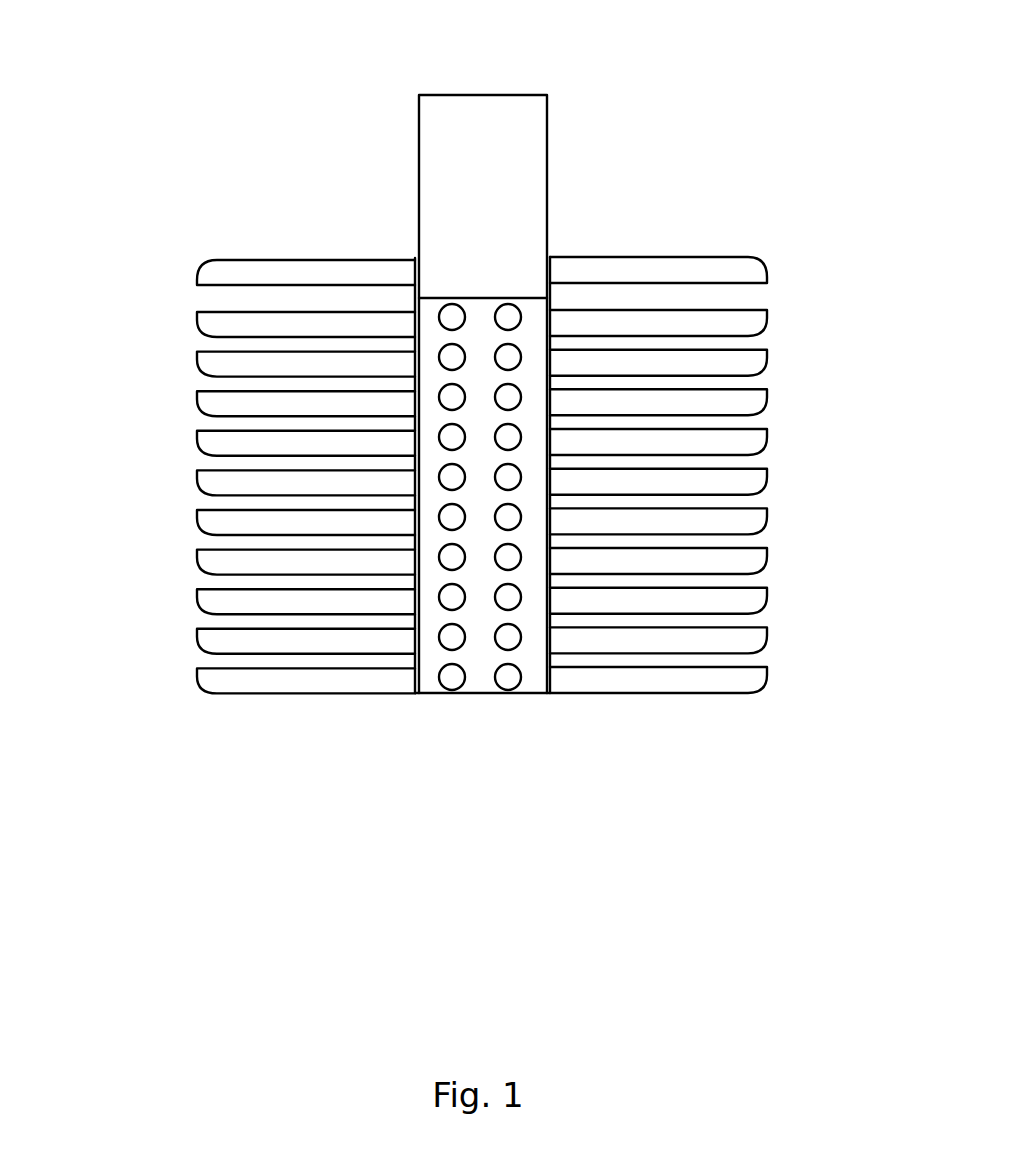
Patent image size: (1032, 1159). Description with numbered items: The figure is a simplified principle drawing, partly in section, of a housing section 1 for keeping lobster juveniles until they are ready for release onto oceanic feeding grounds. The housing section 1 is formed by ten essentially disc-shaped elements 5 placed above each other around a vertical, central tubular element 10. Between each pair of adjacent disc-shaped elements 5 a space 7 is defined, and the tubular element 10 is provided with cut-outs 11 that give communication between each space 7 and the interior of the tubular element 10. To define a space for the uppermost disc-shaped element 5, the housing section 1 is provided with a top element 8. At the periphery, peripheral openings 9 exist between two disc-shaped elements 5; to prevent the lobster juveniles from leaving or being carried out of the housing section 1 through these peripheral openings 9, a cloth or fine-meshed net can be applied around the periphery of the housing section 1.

The housing section 1 is at (233, 163).
The disc-shaped element 5 is at (222, 410).
The space 7 is at (637, 660).
The top element 8 is at (673, 272).
The peripheral opening 9 is at (208, 622).
The tubular element 10 is at (483, 145).
The cut-out 11 is at (453, 677).